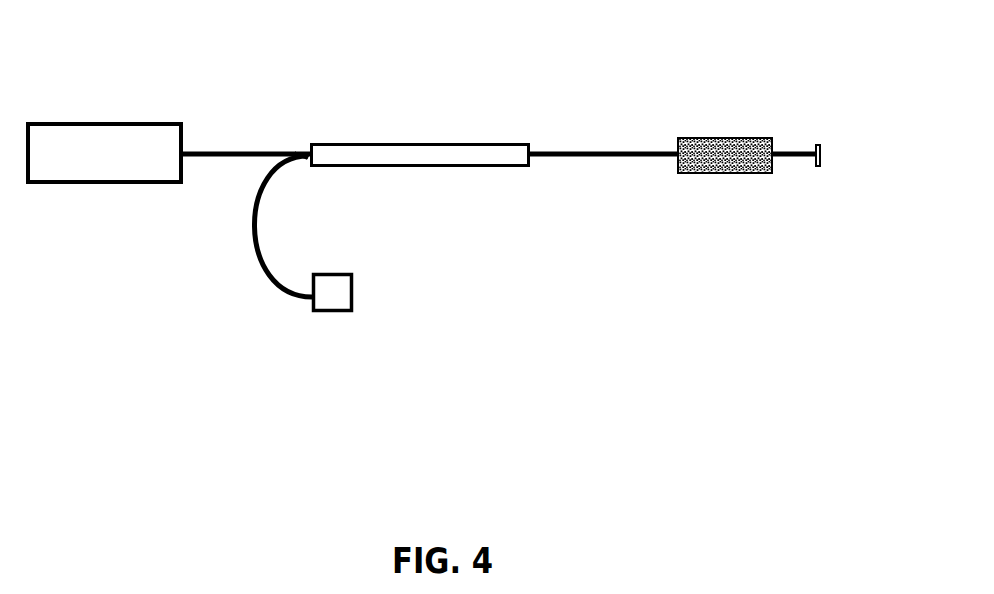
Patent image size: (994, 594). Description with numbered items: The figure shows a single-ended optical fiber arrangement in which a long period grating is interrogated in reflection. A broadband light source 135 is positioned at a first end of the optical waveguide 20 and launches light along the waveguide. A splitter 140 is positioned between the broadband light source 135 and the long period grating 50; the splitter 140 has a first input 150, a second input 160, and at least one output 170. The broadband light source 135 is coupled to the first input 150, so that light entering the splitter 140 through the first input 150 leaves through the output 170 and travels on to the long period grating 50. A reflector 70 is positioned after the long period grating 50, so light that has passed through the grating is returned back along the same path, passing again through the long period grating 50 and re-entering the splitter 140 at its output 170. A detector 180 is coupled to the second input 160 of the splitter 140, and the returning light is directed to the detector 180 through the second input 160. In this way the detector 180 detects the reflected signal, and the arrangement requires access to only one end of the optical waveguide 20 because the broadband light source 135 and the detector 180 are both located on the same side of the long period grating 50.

The broadband light source 135 is at (147, 121).
The optical waveguide 20 is at (263, 151).
The first input 150 is at (307, 151).
The second input 160 is at (262, 272).
The detector 180 is at (325, 312).
The splitter 140 is at (463, 143).
The output 170 is at (618, 152).
The long period grating 50 is at (750, 140).
The reflector 70 is at (822, 168).